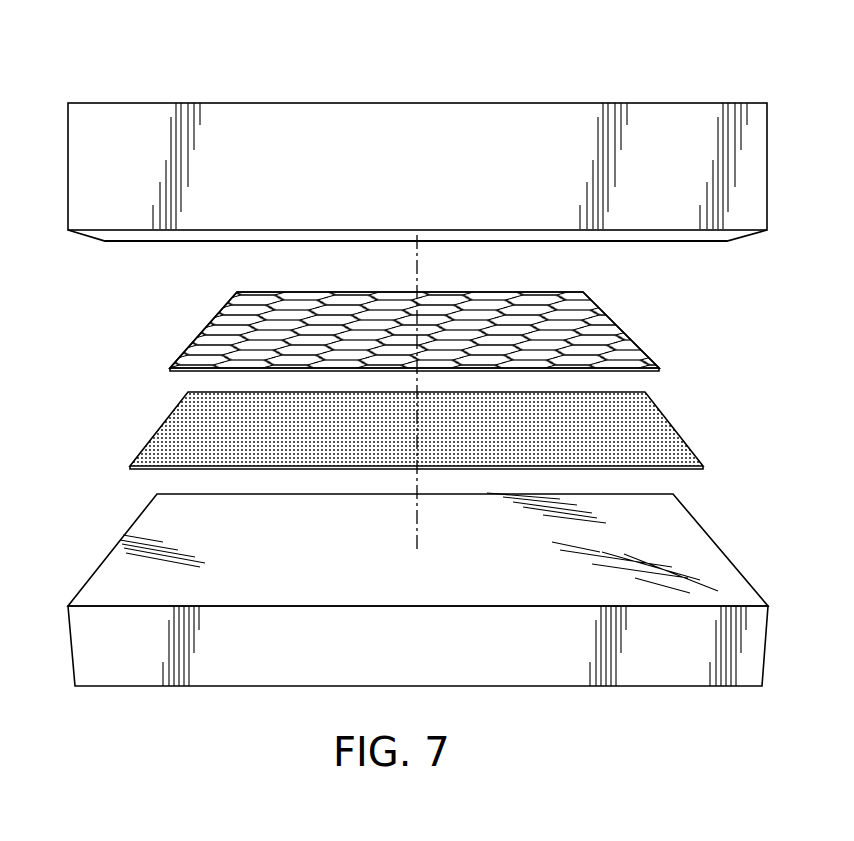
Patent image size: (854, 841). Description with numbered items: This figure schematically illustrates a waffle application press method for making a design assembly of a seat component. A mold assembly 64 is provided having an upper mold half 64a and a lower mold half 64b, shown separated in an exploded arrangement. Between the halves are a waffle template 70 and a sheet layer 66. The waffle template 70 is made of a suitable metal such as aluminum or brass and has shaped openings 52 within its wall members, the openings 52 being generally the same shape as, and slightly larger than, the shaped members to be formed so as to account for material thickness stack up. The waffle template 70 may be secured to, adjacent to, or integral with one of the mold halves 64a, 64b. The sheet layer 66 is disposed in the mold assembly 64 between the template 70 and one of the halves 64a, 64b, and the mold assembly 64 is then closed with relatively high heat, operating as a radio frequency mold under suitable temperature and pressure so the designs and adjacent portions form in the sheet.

The mold assembly 64 is at (590, 92).
The upper mold half 64a is at (437, 182).
The lower mold half 64b is at (435, 661).
The shaped openings 52 is at (220, 358).
The waffle template 70 is at (648, 352).
The sheet layer 66 is at (678, 425).